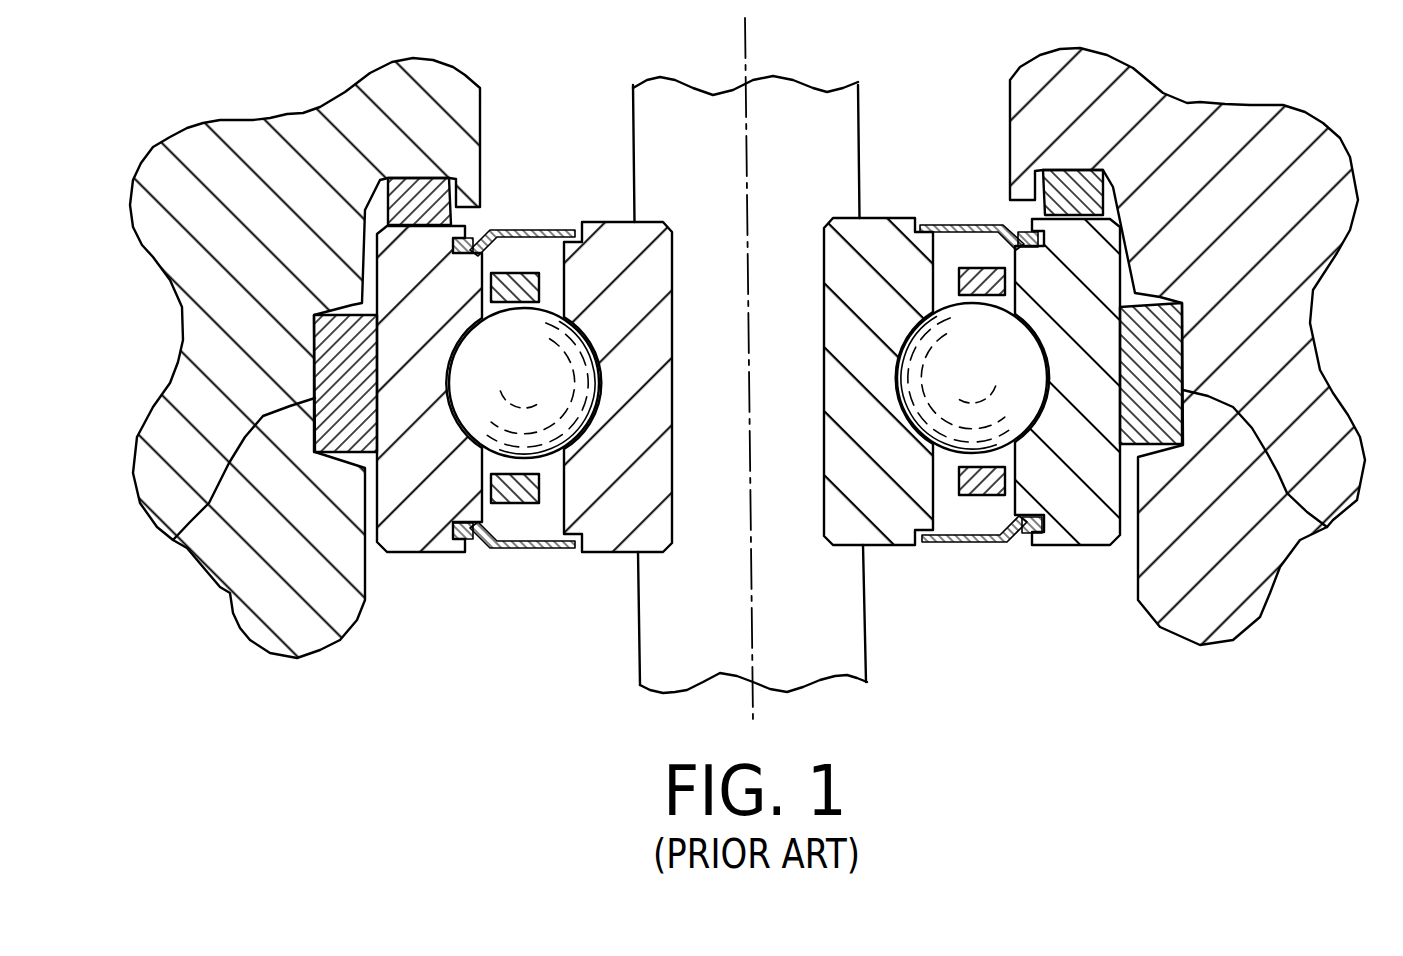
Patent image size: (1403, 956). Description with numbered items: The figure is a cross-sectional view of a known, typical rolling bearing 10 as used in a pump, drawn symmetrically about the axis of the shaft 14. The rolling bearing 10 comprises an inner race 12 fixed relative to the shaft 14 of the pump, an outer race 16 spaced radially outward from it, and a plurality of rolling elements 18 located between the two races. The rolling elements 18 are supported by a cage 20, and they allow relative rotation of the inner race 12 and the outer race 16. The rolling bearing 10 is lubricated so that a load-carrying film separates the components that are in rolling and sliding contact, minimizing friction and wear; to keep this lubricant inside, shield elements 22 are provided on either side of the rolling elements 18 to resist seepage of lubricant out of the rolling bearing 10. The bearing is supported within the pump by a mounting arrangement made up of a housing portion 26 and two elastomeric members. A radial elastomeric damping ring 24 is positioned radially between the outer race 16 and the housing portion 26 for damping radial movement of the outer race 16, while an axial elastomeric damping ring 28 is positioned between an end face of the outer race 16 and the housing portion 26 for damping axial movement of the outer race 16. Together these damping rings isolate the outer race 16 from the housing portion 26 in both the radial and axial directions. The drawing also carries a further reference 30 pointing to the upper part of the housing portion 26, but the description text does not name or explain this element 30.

The rolling bearing 10 is at (1018, 652).
The inner race 12 is at (617, 552).
The shaft 14 is at (827, 663).
The outer race 16 is at (417, 552).
The rolling elements 18 is at (552, 458).
The cage 20 is at (513, 503).
The shield elements 22 is at (563, 230).
The radial elastomeric damping ring 24 is at (173, 540).
The housing portion 26 is at (180, 372).
The axial elastomeric damping ring 28 is at (453, 200).
The housing bore 30 is at (1110, 193).